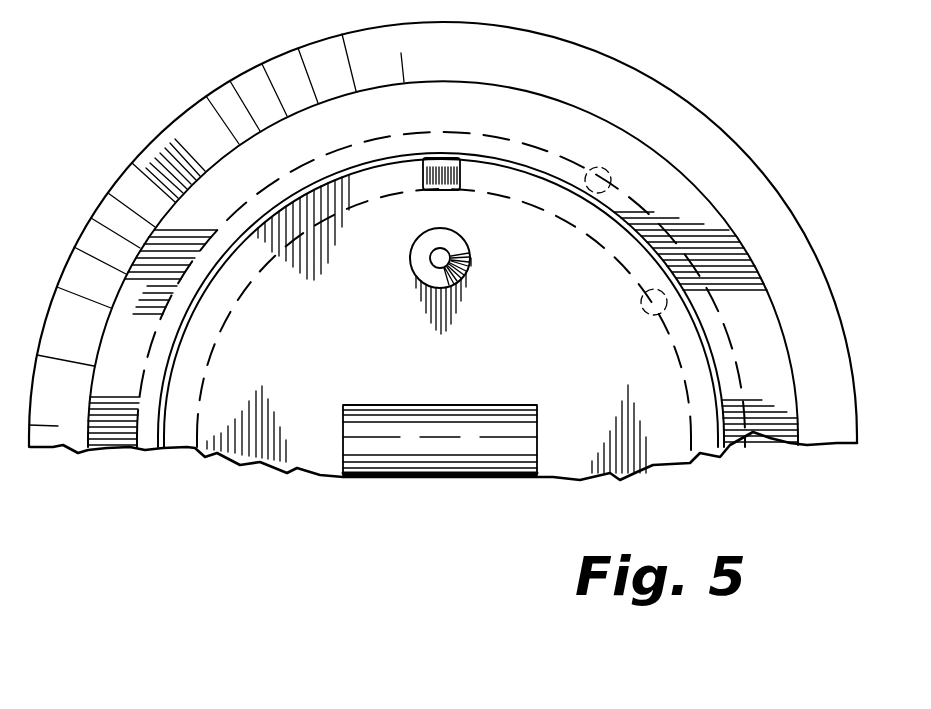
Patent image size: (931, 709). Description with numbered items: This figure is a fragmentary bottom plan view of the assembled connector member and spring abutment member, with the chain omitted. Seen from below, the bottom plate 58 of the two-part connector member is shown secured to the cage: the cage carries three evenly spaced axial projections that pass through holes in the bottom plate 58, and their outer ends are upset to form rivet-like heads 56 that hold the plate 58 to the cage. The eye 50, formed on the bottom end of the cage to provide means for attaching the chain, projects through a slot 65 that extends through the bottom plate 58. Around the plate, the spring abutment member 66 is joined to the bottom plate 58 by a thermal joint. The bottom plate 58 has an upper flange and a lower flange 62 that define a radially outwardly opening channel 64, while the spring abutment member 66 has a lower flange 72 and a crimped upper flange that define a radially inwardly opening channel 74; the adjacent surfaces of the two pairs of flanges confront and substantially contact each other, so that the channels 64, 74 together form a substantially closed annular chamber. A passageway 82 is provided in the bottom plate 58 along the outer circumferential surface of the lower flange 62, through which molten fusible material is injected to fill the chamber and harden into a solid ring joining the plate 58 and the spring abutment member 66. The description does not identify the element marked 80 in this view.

The eye 50 is at (488, 420).
The rivet-like heads 56 is at (447, 288).
The bottom plate 58 is at (290, 382).
The lower flange 62 is at (696, 370).
The radially outwardly opening recess 64 is at (641, 303).
The slot 65 is at (378, 414).
The spring abutment member 66 is at (548, 52).
The lower flange 72 is at (482, 148).
The radially inwardly opening recess 74 is at (612, 188).
The liner wall 80 is at (673, 267).
The passageway 82 is at (441, 190).